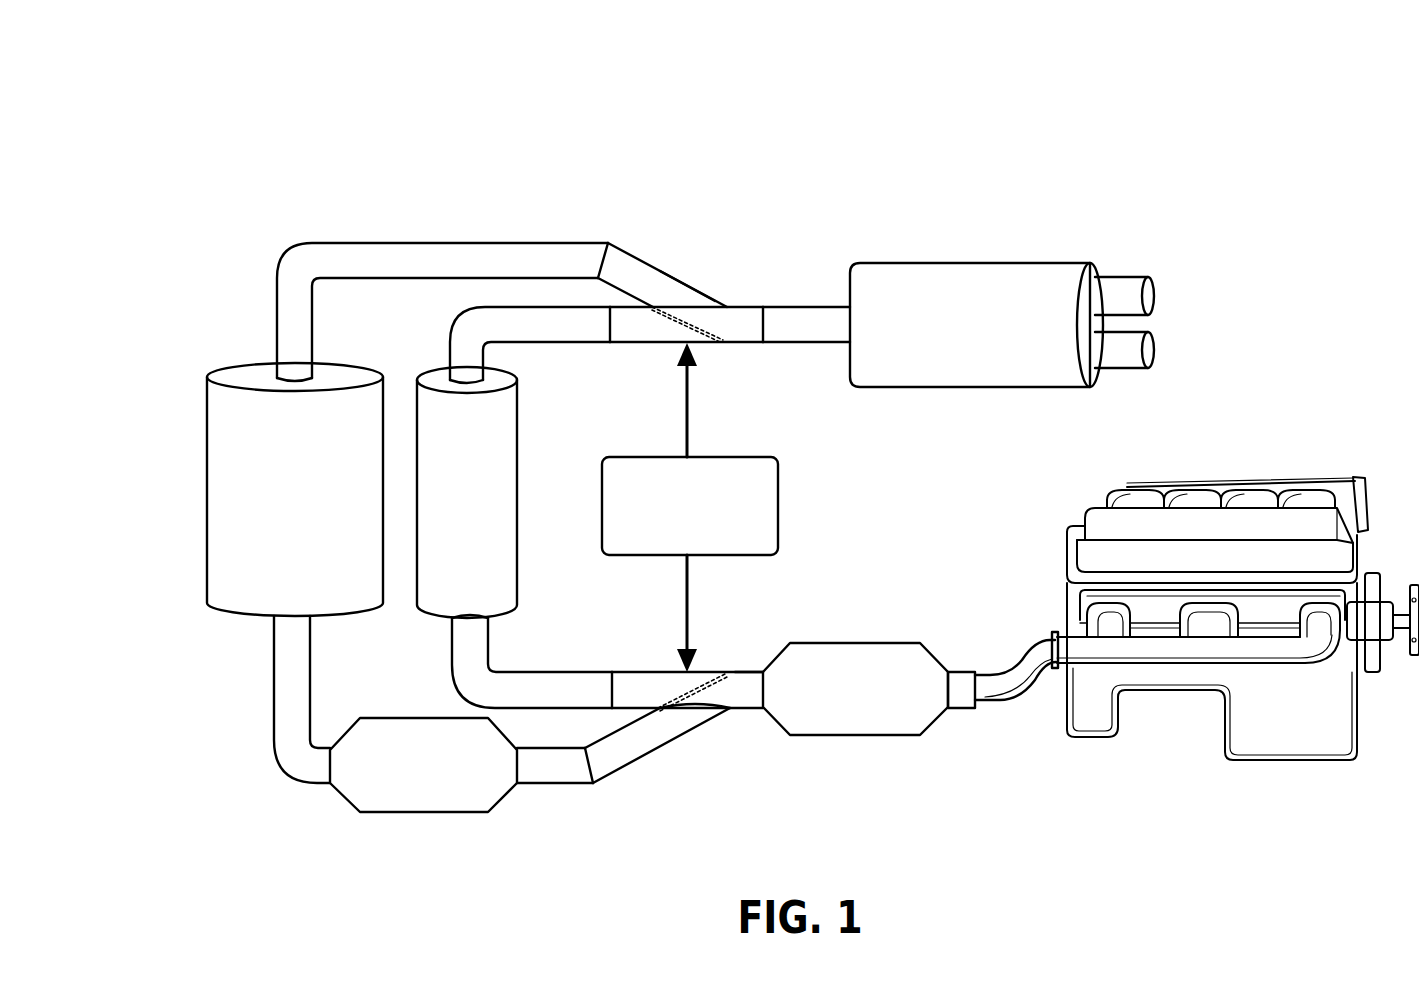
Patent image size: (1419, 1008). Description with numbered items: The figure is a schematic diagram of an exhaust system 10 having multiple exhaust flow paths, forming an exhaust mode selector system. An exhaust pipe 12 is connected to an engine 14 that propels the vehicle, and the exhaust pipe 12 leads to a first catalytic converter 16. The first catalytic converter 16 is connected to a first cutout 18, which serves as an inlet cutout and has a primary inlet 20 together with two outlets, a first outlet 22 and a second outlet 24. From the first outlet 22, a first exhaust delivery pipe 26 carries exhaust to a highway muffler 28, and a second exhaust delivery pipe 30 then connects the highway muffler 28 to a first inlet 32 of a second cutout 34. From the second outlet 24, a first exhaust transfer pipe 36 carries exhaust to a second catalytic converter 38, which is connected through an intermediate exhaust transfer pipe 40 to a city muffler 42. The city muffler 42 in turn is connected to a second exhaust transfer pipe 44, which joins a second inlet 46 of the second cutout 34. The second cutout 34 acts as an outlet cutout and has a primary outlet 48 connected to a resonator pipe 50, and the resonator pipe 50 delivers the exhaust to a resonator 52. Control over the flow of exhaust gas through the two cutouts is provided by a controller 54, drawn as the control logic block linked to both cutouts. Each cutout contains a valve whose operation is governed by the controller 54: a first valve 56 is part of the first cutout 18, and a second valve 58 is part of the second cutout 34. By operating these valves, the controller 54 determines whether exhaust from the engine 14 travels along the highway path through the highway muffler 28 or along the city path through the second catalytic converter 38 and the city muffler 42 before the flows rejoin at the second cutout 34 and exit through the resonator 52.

The exhaust system 10 is at (490, 155).
The exhaust pipe 12 is at (960, 678).
The engine 14 is at (1238, 730).
The first catalytic converter 16 is at (866, 648).
The first cutout 18 is at (672, 728).
The primary inlet 20 is at (748, 681).
The first outlet 22 is at (628, 681).
The second outlet 24 is at (605, 762).
The first exhaust delivery pipe 26 is at (464, 664).
The highway muffler 28 is at (516, 447).
The second exhaust delivery pipe 30 is at (470, 347).
The first inlet 32 is at (641, 336).
The second cutout 34 is at (694, 300).
The first exhaust transfer pipe 36 is at (548, 777).
The second catalytic converter 38 is at (353, 790).
The intermediate exhaust transfer pipe 40 is at (280, 676).
The city muffler 42 is at (216, 447).
The second exhaust transfer pipe 44 is at (355, 258).
The second inlet 46 is at (615, 266).
The primary outlet 48 is at (756, 320).
The resonator pipe 50 is at (818, 318).
The resonator 52 is at (1034, 272).
The controller 54 is at (778, 528).
The first valve 56 is at (700, 690).
The second valve 58 is at (680, 322).